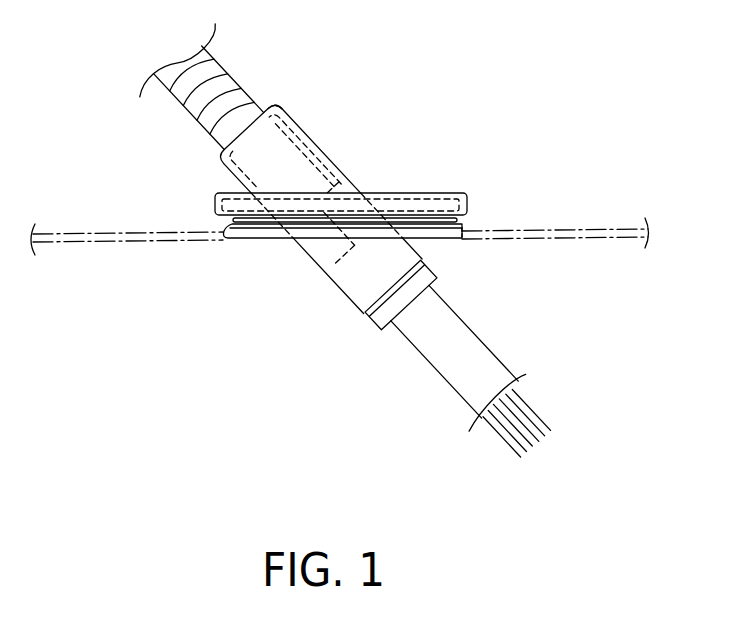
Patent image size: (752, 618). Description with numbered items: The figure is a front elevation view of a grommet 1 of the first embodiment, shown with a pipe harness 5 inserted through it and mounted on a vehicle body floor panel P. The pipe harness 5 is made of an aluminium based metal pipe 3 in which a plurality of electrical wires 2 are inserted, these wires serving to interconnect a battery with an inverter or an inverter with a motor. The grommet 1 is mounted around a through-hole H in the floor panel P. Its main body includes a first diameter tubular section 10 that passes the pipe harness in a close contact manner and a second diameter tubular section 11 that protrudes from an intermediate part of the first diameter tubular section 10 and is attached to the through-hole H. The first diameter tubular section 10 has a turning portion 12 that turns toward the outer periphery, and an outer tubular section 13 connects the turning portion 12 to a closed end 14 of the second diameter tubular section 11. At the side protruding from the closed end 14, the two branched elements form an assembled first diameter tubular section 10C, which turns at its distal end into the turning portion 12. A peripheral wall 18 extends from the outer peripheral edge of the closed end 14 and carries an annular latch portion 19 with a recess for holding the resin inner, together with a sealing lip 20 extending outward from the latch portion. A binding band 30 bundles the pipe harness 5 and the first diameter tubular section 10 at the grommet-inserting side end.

The grommet 1 is at (430, 167).
The electrical wires 2 is at (497, 430).
The pipe 3 is at (494, 354).
The pipe harness 5 is at (430, 377).
The first diameter tubular section 10 is at (323, 262).
The assembled first diameter tubular section 10C is at (222, 181).
The second diameter tubular section 11 is at (466, 195).
The turning portion 12 is at (272, 103).
The outer tubular section 13 is at (312, 122).
The closed end 14 is at (386, 192).
The peripheral wall 18 is at (507, 296).
The annular latch portion 19 is at (469, 205).
The sealing lip 20 is at (445, 237).
The binding band 30 is at (379, 333).
The through-hole H is at (222, 235).
The floor panel P is at (96, 233).